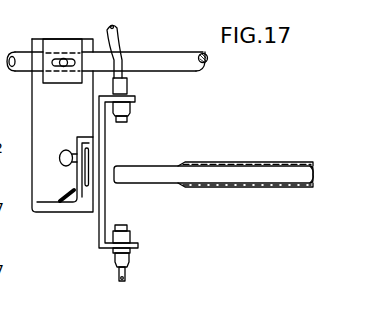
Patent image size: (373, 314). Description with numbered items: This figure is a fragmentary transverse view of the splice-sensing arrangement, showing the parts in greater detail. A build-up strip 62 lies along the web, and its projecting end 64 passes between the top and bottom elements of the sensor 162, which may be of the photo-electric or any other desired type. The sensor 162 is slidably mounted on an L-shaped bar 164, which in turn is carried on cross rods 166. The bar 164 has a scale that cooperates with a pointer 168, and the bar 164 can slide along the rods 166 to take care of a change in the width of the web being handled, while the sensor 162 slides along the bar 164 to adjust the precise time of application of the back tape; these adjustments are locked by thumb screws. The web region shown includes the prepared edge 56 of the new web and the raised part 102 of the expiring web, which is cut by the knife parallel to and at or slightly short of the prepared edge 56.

The cross rods 166 is at (147, 52).
The L-shaped bar 164 is at (68, 213).
The pointer 168 is at (68, 193).
The sensor 162 is at (96, 238).
The projecting end 64 is at (141, 177).
The build-up strip 62 is at (287, 171).
The prepared edge 56 is at (240, 163).
The raised part 102 is at (209, 187).